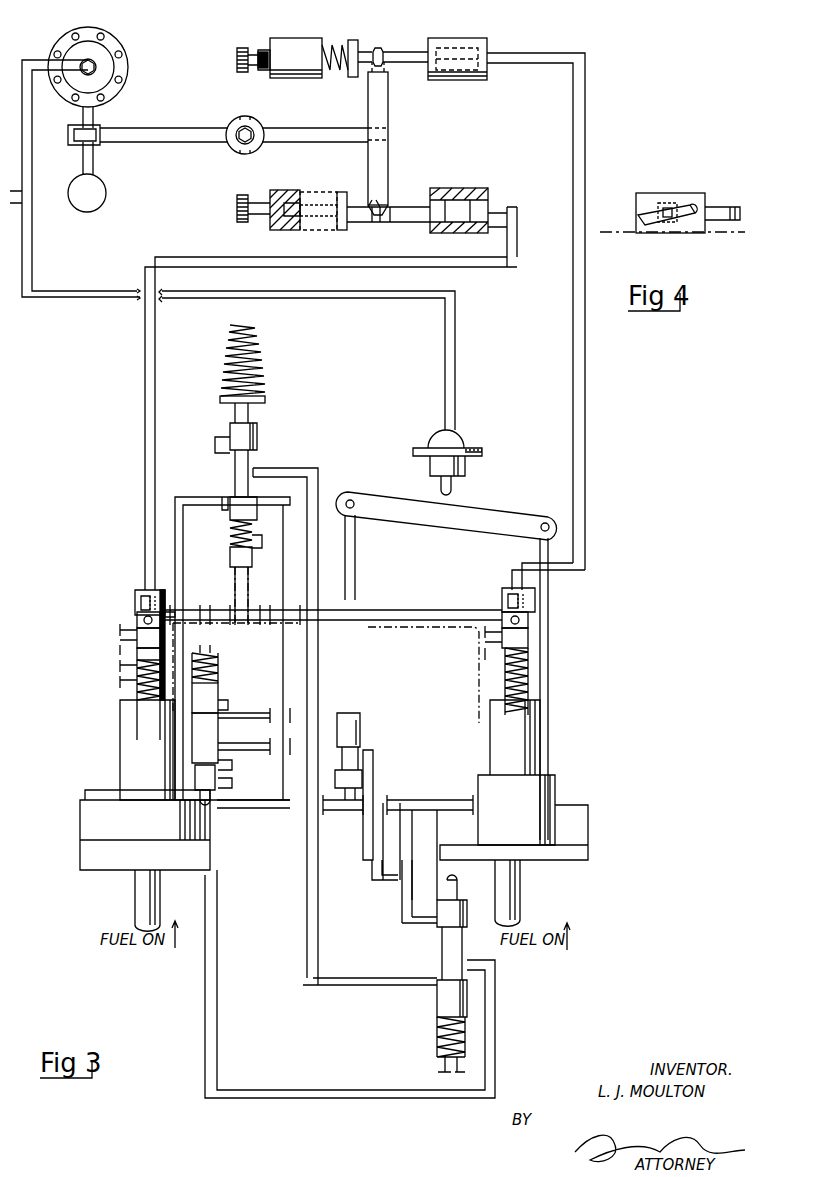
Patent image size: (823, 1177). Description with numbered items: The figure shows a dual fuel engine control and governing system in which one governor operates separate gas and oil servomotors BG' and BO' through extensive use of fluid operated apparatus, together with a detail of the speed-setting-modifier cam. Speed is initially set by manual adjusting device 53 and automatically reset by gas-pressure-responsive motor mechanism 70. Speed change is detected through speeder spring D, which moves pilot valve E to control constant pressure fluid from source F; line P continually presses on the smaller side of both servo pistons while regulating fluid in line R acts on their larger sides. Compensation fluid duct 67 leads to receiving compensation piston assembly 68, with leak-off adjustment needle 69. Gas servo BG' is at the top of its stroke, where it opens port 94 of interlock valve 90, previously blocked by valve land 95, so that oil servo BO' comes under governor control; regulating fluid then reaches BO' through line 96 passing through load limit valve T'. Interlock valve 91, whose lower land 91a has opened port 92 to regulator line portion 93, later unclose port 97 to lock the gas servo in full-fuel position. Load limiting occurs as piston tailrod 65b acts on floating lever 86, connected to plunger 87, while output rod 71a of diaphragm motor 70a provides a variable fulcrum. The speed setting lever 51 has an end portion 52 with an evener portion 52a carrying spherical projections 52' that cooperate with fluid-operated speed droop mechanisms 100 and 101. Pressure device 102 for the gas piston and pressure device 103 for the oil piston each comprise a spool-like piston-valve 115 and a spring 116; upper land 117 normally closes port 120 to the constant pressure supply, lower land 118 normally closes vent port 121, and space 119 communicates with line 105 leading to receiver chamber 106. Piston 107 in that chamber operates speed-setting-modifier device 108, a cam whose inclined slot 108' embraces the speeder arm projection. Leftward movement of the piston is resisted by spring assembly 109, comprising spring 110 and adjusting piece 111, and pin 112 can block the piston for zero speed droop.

In FIG. 3, the gas-pressure-responsive motor mechanism 70 is at (130, 75).
In FIG. 3, the lever 51 is at (194, 160).
In FIG. 3, the manual adjusting device 53 is at (105, 205).
In FIG. 3, the spring 110 is at (348, 45).
In FIG. 3, the spherical projections 52' is at (393, 112).
In FIG. 4, the spherical projections 52' is at (679, 186).
In FIG. 3, the fluid-operated speed droop mechanism 100 is at (437, 96).
In FIG. 3, the governor speed-setting-modifier device 108 is at (492, 311).
In FIG. 4, the governor speed-setting-modifier device 108 is at (691, 191).
In FIG. 4, the inclined slot 108' is at (656, 187).
In FIG. 3, the evener portion 52a is at (388, 156).
In FIG. 3, the end portion 52 is at (332, 109).
In FIG. 3, the fluid-operated speed droop mechanism 101 is at (421, 172).
In FIG. 3, the adjusting piece 111 is at (243, 222).
In FIG. 3, the pin 112 is at (292, 233).
In FIG. 3, the spring assembly 109 is at (342, 172).
In FIG. 3, the pressure device 103 is at (372, 228).
In FIG. 3, the receiver chamber 106 is at (470, 188).
In FIG. 3, the piston 107 is at (422, 231).
In FIG. 4, the piston 107 is at (718, 205).
In FIG. 3, the line 105 is at (145, 442).
In FIG. 3, the diaphragm motor 70a is at (463, 430).
In FIG. 3, the output rod 71a is at (455, 479).
In FIG. 3, the floating lever 86 is at (490, 510).
In FIG. 3, the piston tailrod 65b is at (550, 622).
In FIG. 3, the speeder spring D is at (262, 384).
In FIG. 3, the pilot valve E is at (262, 465).
In FIG. 3, the source F is at (175, 497).
In FIG. 3, the regulating fluid line R is at (318, 545).
In FIG. 3, the receiving compensation piston assembly 68 is at (220, 553).
In FIG. 3, the spool-like piston-valve 115 is at (135, 590).
In FIG. 3, the upper land 117 is at (135, 598).
In FIG. 3, the space 119 is at (140, 618).
In FIG. 3, the port 120 is at (172, 616).
In FIG. 3, the pressure device 102 is at (96, 632).
In FIG. 3, the vent port 121 is at (120, 635).
In FIG. 3, the lower land 118 is at (130, 652).
In FIG. 3, the spring 116 is at (125, 676).
In FIG. 3, the gas servo BG' is at (114, 815).
In FIG. 3, the oil servo BO' is at (544, 813).
In FIG. 3, the constant pressure line P is at (258, 606).
In FIG. 3, the leak-off adjustment needle 69 is at (238, 628).
In FIG. 3, the compensation fluid duct 67 is at (392, 632).
In FIG. 3, the interlock valve 90 is at (230, 688).
In FIG. 3, the valve land 95 is at (205, 698).
In FIG. 3, the port 94 is at (225, 712).
In FIG. 3, the line 96 is at (290, 770).
In FIG. 3, the plunger 87 is at (360, 713).
In FIG. 3, the load limit valve T' is at (383, 734).
In FIG. 3, the port 97 is at (437, 920).
In FIG. 3, the port 92 is at (437, 980).
In FIG. 3, the interlock valve 91 is at (420, 1016).
In FIG. 3, the lower land 91a is at (467, 1012).
In FIG. 3, the regulator line portion 93 is at (237, 1090).